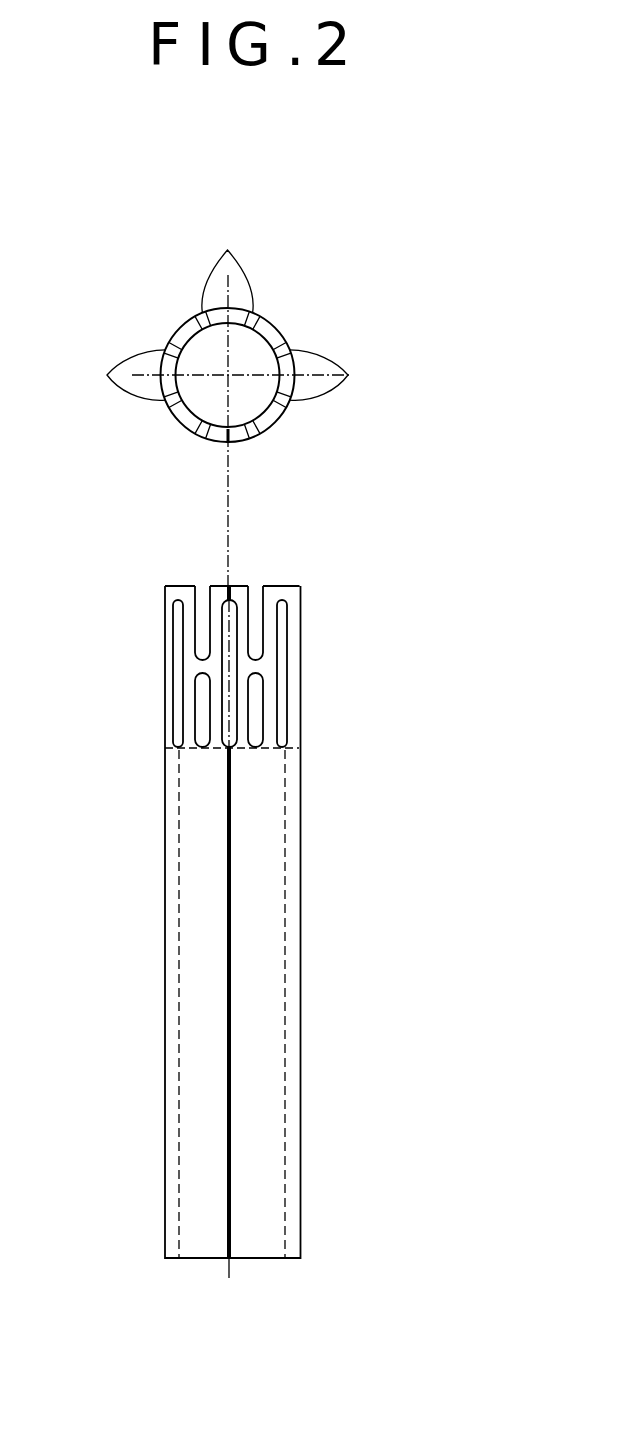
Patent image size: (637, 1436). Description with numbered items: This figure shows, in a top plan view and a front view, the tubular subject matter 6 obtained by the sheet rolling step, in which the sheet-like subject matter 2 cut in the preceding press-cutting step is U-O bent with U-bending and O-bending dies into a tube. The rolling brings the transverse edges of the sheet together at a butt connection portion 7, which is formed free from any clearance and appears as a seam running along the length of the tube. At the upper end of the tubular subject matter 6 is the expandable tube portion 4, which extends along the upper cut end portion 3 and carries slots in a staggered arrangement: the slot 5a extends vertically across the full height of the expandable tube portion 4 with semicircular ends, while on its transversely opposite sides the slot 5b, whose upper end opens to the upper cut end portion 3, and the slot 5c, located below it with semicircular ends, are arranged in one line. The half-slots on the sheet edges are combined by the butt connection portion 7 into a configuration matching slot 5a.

The subject matter 2 is at (145, 306).
The upper cut end portion 3 is at (273, 333).
The expandable tube portion 4 is at (323, 681).
The slot 5a is at (177, 637).
The slot 5b is at (258, 600).
The slot 5c is at (200, 705).
The tubular subject matter 6 is at (357, 878).
The butt connection portion 7 is at (230, 443).